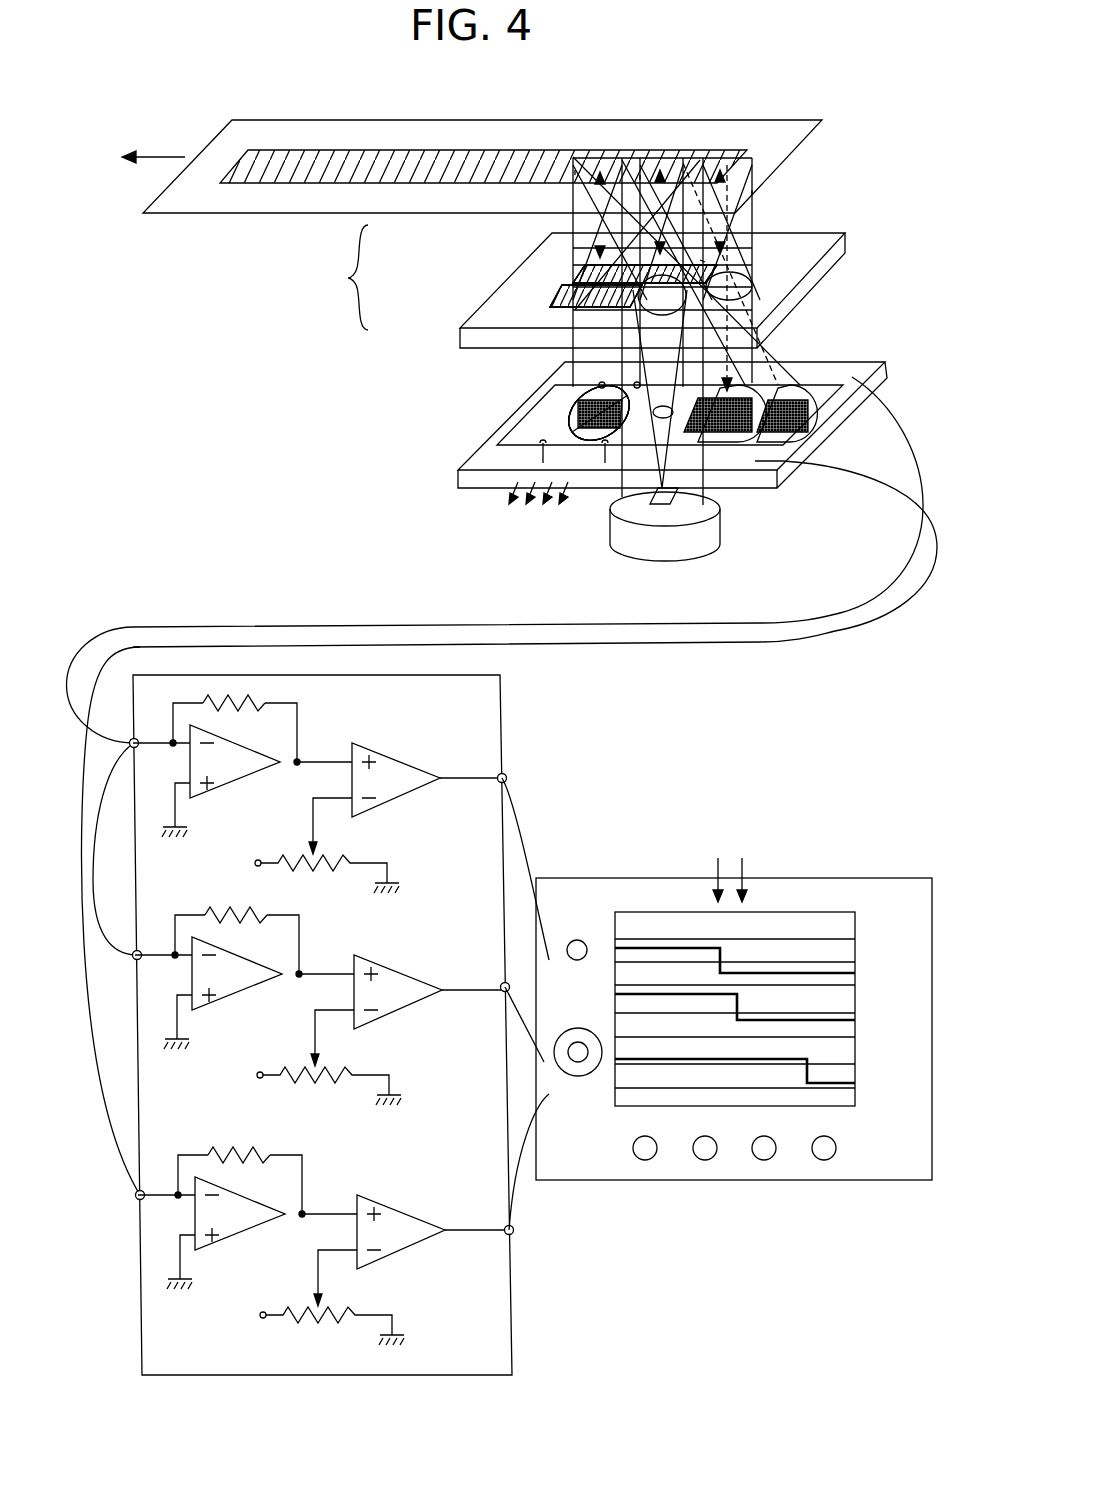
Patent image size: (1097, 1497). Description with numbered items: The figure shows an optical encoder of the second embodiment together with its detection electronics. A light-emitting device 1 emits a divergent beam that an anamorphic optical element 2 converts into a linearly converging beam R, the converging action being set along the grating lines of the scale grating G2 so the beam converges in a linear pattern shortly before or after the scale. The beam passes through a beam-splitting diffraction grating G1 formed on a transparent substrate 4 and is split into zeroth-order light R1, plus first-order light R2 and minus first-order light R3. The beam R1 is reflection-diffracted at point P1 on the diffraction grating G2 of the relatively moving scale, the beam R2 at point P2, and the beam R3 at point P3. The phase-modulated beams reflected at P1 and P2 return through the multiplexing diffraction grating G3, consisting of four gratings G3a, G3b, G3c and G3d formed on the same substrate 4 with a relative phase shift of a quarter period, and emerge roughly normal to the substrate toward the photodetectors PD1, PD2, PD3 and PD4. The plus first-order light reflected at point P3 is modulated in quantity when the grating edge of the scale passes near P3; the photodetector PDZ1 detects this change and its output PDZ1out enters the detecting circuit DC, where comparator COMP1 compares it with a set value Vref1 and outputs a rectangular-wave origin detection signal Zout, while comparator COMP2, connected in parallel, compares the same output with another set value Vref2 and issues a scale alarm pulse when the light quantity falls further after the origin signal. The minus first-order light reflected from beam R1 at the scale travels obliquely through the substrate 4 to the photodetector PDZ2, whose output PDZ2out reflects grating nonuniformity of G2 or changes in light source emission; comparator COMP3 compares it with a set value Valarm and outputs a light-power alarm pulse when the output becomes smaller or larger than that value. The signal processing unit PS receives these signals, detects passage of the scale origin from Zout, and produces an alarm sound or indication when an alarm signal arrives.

The light-emitting device 1 is at (680, 500).
The anamorphic optical element 2 is at (722, 334).
The transparent substrate 4 is at (835, 261).
The diffraction grating for splitting a beam G1 is at (735, 262).
The diffraction grating on the scale G2 is at (262, 156).
The diffraction grating for multiplexing beams G3 is at (339, 277).
The diffraction grating for multiplexing beams G3a is at (592, 280).
The diffraction grating for multiplexing beams G3b is at (585, 270).
The diffraction grating for multiplexing beams G3c is at (580, 303).
The diffraction grating for multiplexing beams G3d is at (590, 292).
The converging beam R is at (660, 395).
The zeroth-order diffracted light R1 is at (685, 250).
The plus first-order diffracted light R2 is at (622, 240).
The minus first-order diffracted light R3 is at (705, 195).
The point on the diffraction grating G2 P1 is at (640, 175).
The point on the diffraction grating G2 P2 is at (575, 170).
The point on the diffraction grating G2 P3 is at (752, 190).
The photodetector PD1 is at (578, 405).
The photodetector PD2 is at (575, 398).
The photodetector PD3 is at (578, 427).
The photodetector PD4 is at (580, 415).
The origin detecting photodetector PDZ1 is at (722, 443).
The photodetector PDZ2 is at (800, 395).
The output of photodetector PDZ1 PDZ1out is at (535, 554).
The output of photodetector PDZ2 PDZ2out is at (890, 402).
The signal processing unit PS is at (737, 1171).
The detecting circuit DC is at (316, 1001).
The comparator COMP1 is at (378, 800).
The comparator COMP2 is at (380, 1013).
The comparator COMP3 is at (383, 1253).
The origin detection signal Zout is at (497, 854).
The set value Vref1 is at (262, 847).
The set value Vref2 is at (267, 1061).
The alarm reference voltage Valarm is at (269, 1302).